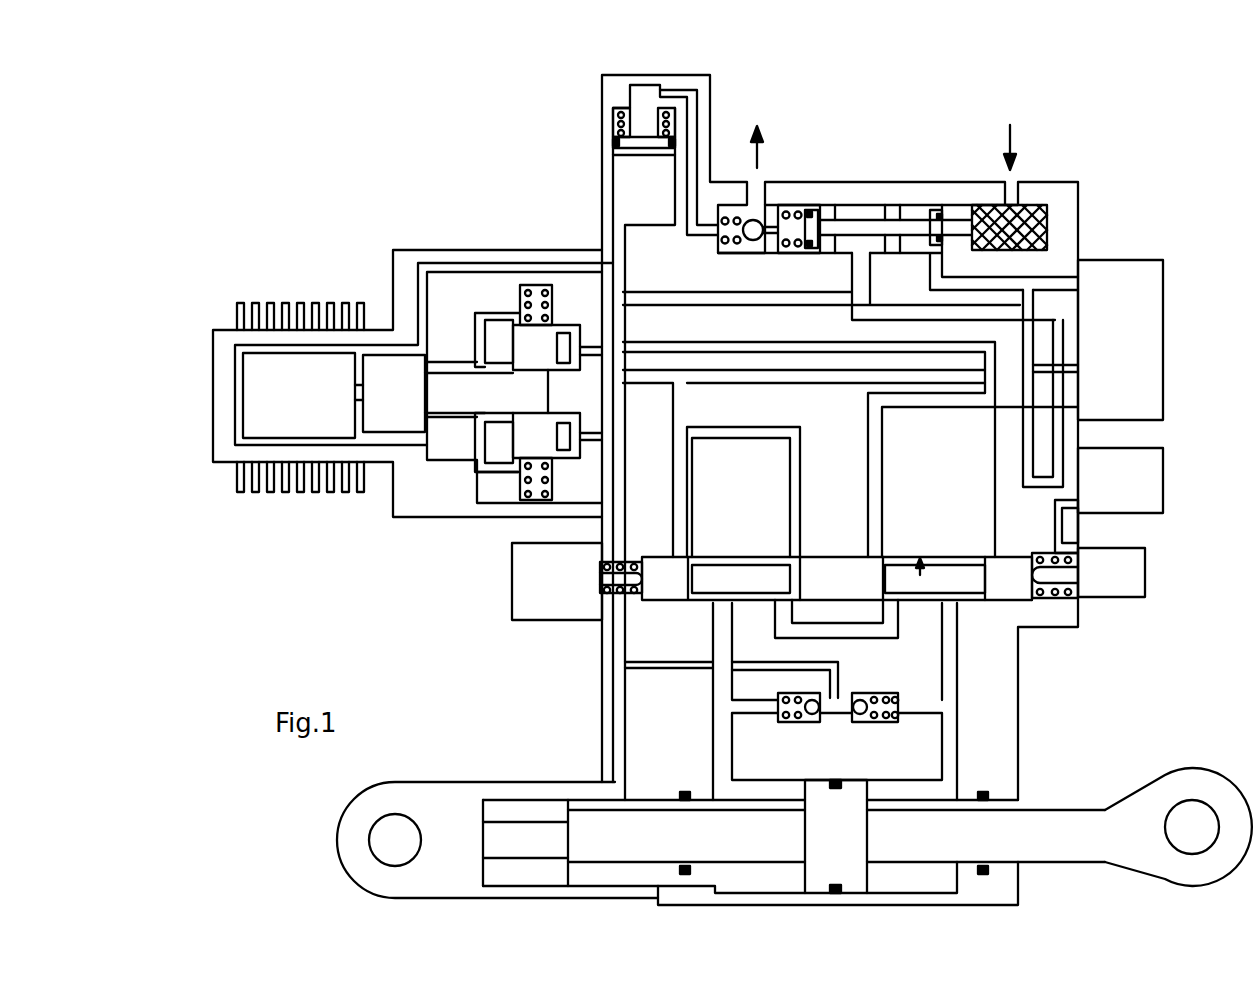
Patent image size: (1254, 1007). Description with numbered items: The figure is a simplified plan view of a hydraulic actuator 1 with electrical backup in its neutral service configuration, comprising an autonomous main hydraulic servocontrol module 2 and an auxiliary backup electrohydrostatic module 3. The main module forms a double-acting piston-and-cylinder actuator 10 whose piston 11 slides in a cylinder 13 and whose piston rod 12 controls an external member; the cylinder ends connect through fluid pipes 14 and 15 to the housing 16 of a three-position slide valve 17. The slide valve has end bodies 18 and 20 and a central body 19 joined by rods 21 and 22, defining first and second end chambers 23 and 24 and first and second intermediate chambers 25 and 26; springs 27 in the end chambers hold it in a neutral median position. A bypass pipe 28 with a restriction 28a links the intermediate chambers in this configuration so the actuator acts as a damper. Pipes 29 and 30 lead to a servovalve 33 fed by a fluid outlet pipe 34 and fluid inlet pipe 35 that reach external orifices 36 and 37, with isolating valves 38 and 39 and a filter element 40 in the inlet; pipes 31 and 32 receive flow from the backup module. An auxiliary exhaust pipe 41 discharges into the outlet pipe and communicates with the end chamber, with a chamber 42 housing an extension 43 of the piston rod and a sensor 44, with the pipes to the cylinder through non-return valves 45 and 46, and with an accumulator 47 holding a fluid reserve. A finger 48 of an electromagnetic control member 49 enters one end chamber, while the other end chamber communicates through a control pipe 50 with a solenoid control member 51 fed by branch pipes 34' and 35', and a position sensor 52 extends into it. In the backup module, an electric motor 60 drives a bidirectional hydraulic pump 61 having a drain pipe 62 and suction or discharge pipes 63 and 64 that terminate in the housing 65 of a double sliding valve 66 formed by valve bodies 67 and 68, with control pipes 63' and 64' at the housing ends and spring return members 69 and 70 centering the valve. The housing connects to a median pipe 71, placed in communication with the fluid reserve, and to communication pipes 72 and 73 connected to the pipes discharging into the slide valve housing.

The hydraulic actuator 1 is at (338, 163).
The main hydraulic servocontrol module 2 is at (855, 150).
The auxiliary backup electrohydrostatic module 3 is at (410, 518).
The double-acting piston-and-cylinder actuator 10 is at (935, 875).
The piston 11 is at (868, 792).
The piston rod 12 is at (1077, 802).
The cylinder 13 is at (772, 790).
The fluid pipe 14 is at (718, 717).
The fluid pipe 15 is at (947, 688).
The housing 16 is at (937, 548).
The slide valve 17 is at (1025, 547).
The end body 18 is at (837, 578).
The central body 19 is at (837, 590).
The end body 20 is at (1008, 578).
The rod 21 is at (741, 578).
The rod 22 is at (935, 578).
The first end chamber 23 is at (630, 557).
The second end chamber 24 is at (1113, 600).
The first intermediate chamber 25 is at (730, 557).
The second intermediate chamber 26 is at (890, 558).
The spring 27 is at (1073, 562).
The bypass pipe 28 is at (898, 623).
The restriction 28a is at (850, 630).
The pipe 29 is at (688, 478).
The pipe 30 is at (880, 440).
The pipe 31 is at (802, 507).
The pipe 32 is at (985, 470).
The servovalve 33 is at (1163, 337).
The fluid outlet pipe 34 is at (839, 286).
The branch pipe 34' is at (1095, 408).
The fluid inlet pipe 35 is at (989, 264).
The branch pipe 35' is at (1033, 413).
The orifice 36 is at (757, 183).
The orifice 37 is at (1012, 178).
The isolating valve 38 is at (790, 208).
The isolating valve 39 is at (920, 210).
The filter element 40 is at (1050, 223).
The auxiliary exhaust pipe 41 is at (623, 405).
The chamber 42 is at (530, 805).
The extension 43 is at (597, 887).
The sensor 44 is at (505, 817).
The non-return valve 45 is at (812, 722).
The non-return valve 46 is at (863, 722).
The accumulator 47 is at (627, 177).
The finger 48 is at (608, 600).
The additional slide valve control member 49 is at (532, 625).
The control pipe 50 is at (1063, 540).
The control member 51 is at (1163, 477).
The position sensor 52 is at (1147, 580).
The electric motor 60 is at (303, 395).
The bidirectional hydraulic pump 61 is at (403, 355).
The drain pipe 62 is at (447, 263).
The suction or discharge pipe 63 is at (474, 333).
The control pipe 63' is at (498, 254).
The suction or discharge pipe 64 is at (380, 444).
The control pipe 64' is at (433, 471).
The housing 65 is at (520, 387).
The double sliding valve 66 is at (535, 500).
The valve body 67 is at (567, 323).
The valve body 68 is at (520, 440).
The spring return member 69 is at (535, 288).
The spring return member 70 is at (533, 490).
The median pipe 71 is at (623, 380).
The communication pipe 72 is at (623, 333).
The communication pipe 73 is at (600, 447).